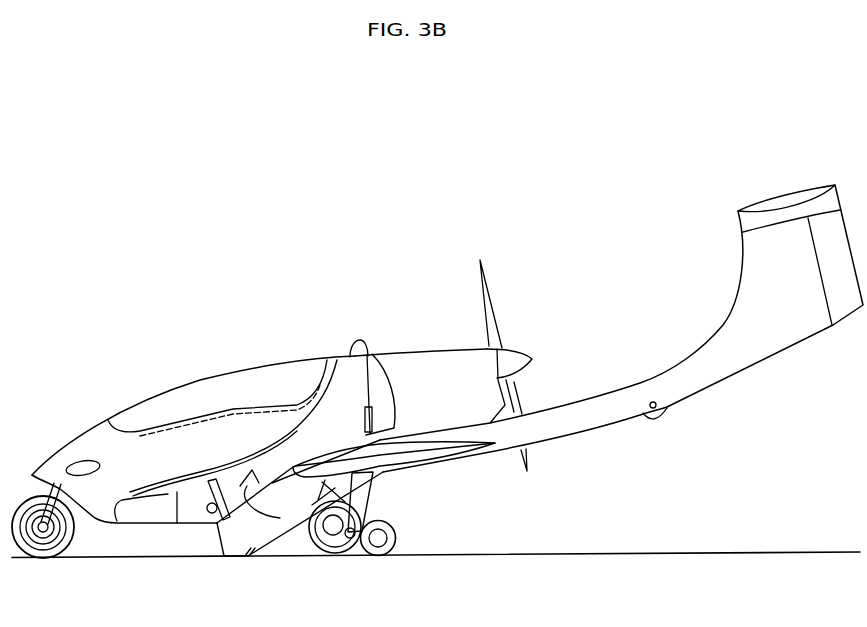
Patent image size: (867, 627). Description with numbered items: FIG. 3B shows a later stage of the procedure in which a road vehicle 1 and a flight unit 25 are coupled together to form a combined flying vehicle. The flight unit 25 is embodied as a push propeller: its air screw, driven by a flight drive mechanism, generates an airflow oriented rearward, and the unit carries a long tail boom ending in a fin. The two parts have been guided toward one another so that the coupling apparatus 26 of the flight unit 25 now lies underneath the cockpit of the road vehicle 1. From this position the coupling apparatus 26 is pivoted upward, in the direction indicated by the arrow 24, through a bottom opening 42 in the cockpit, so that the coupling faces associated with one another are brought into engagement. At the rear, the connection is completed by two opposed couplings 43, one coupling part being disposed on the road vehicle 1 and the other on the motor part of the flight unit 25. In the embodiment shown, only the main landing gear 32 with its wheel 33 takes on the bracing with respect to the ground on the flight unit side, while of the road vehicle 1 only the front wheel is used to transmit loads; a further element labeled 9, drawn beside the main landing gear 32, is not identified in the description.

The road vehicle 1 is at (252, 345).
The flight unit 25 is at (539, 278).
The opposed couplings 43 is at (352, 355).
The bottom opening 42 is at (198, 486).
The arrow 24 is at (258, 519).
The coupling apparatus 26 is at (288, 540).
The main wheel 9 is at (346, 555).
The main landing gear 32 is at (368, 491).
The wheel 33 is at (397, 527).